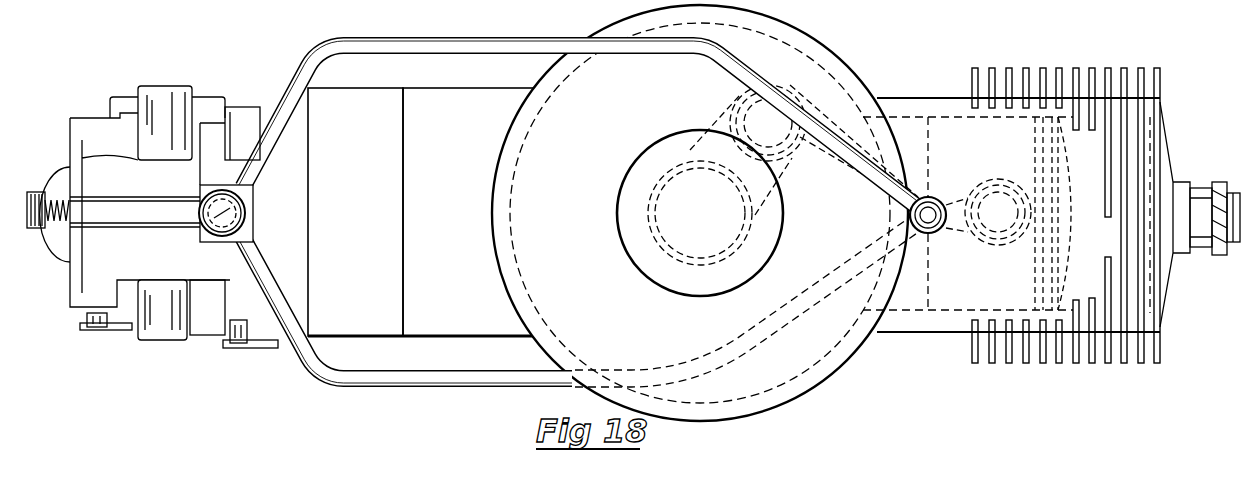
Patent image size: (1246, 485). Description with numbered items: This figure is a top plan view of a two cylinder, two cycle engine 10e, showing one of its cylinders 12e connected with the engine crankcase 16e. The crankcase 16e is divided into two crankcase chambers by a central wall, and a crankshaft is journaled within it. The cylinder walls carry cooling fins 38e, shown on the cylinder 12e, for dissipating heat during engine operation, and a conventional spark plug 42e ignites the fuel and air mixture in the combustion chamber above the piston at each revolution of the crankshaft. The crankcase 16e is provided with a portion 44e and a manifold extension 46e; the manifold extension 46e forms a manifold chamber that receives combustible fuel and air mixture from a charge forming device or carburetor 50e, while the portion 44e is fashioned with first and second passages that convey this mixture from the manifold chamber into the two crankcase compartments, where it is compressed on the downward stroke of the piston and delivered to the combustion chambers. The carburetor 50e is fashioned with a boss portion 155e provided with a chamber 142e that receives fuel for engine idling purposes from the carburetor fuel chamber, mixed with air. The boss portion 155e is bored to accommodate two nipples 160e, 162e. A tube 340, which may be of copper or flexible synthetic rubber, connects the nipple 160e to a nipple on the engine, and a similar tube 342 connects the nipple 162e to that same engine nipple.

The carburetor 50e is at (192, 190).
The tube 340 is at (466, 38).
The tube 342 is at (478, 389).
The manifold extension 46e is at (376, 94).
The portion of the crankcase 44e is at (494, 94).
The engine crankcase 16e is at (812, 29).
The engine 10e is at (965, 197).
The cylinder 12e is at (957, 94).
The cooling fins 38e is at (1073, 80).
The spark plug 42e is at (1203, 186).
The nipple 160e is at (262, 197).
The nipple 162e is at (258, 231).
The chamber 142e is at (250, 206).
The boss portion 155e is at (250, 216).